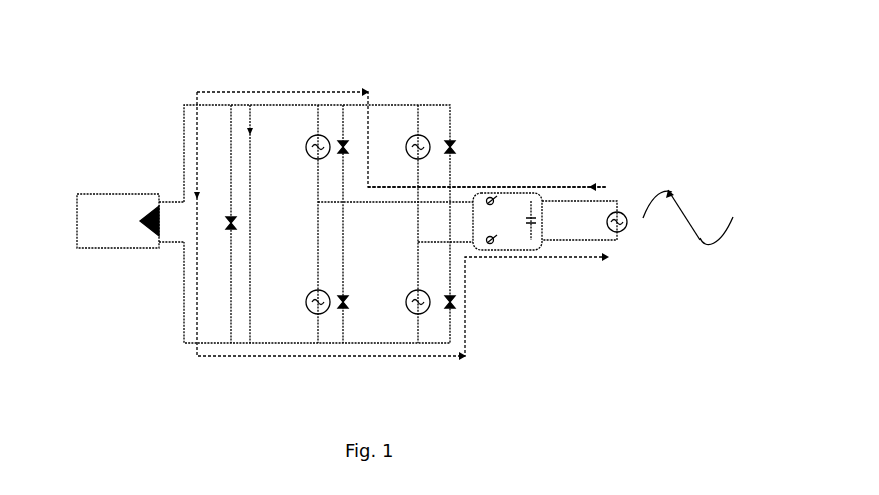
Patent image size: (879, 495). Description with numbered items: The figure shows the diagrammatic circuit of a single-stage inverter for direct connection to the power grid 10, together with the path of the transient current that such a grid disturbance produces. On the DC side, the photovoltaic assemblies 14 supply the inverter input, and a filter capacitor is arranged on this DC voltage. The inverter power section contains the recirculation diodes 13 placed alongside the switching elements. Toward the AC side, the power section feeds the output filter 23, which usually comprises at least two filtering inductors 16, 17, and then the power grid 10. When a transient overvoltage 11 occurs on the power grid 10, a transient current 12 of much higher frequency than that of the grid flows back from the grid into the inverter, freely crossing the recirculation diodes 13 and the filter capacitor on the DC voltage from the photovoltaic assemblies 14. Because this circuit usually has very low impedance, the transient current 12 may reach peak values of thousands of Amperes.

The power grid 10 is at (624, 232).
The transient overvoltage 11 is at (672, 192).
The transient current 12 is at (572, 186).
The recirculation diodes 13 is at (442, 143).
The photovoltaic assemblies 14 is at (125, 210).
The filtering inductor 16 is at (495, 200).
The filtering inductor 17 is at (497, 244).
The output filter 23 is at (540, 232).